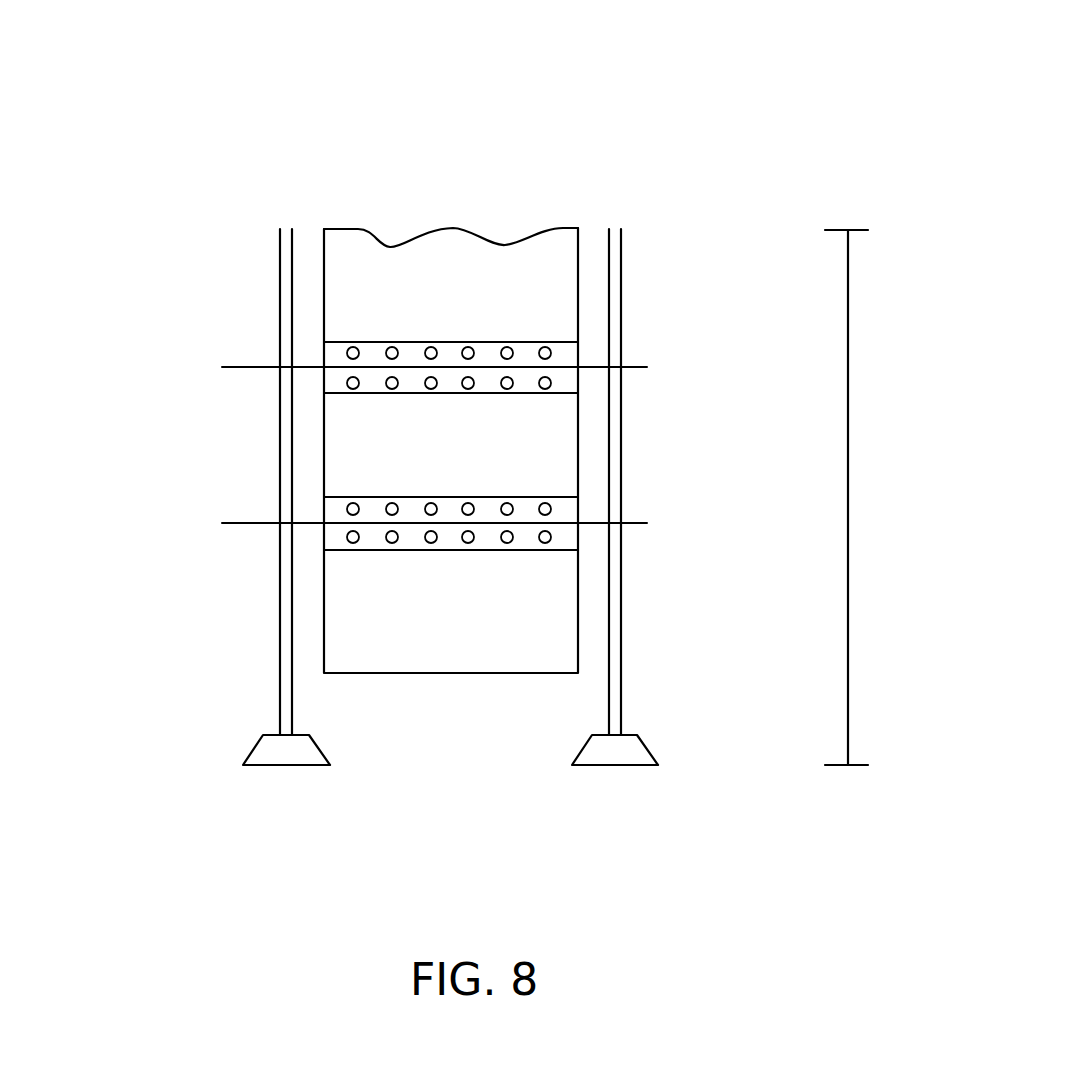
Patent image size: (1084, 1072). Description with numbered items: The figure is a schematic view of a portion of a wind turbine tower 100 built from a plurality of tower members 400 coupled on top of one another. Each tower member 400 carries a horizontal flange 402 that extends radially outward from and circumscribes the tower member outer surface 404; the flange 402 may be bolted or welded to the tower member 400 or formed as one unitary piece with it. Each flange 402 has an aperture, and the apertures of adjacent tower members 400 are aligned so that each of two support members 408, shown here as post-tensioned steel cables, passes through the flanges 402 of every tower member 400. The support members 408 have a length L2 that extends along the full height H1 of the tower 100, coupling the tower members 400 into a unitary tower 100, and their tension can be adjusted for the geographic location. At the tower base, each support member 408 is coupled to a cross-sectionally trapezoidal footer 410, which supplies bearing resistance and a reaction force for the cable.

The tower 100 is at (575, 95).
The tower member 400 is at (542, 303).
The horizontal flange 402 is at (631, 365).
The tower member outer surface 404 is at (556, 261).
The support member 408 is at (280, 407).
The footer 410 is at (307, 752).
The length L2 is at (848, 440).
The height H1 is at (848, 535).